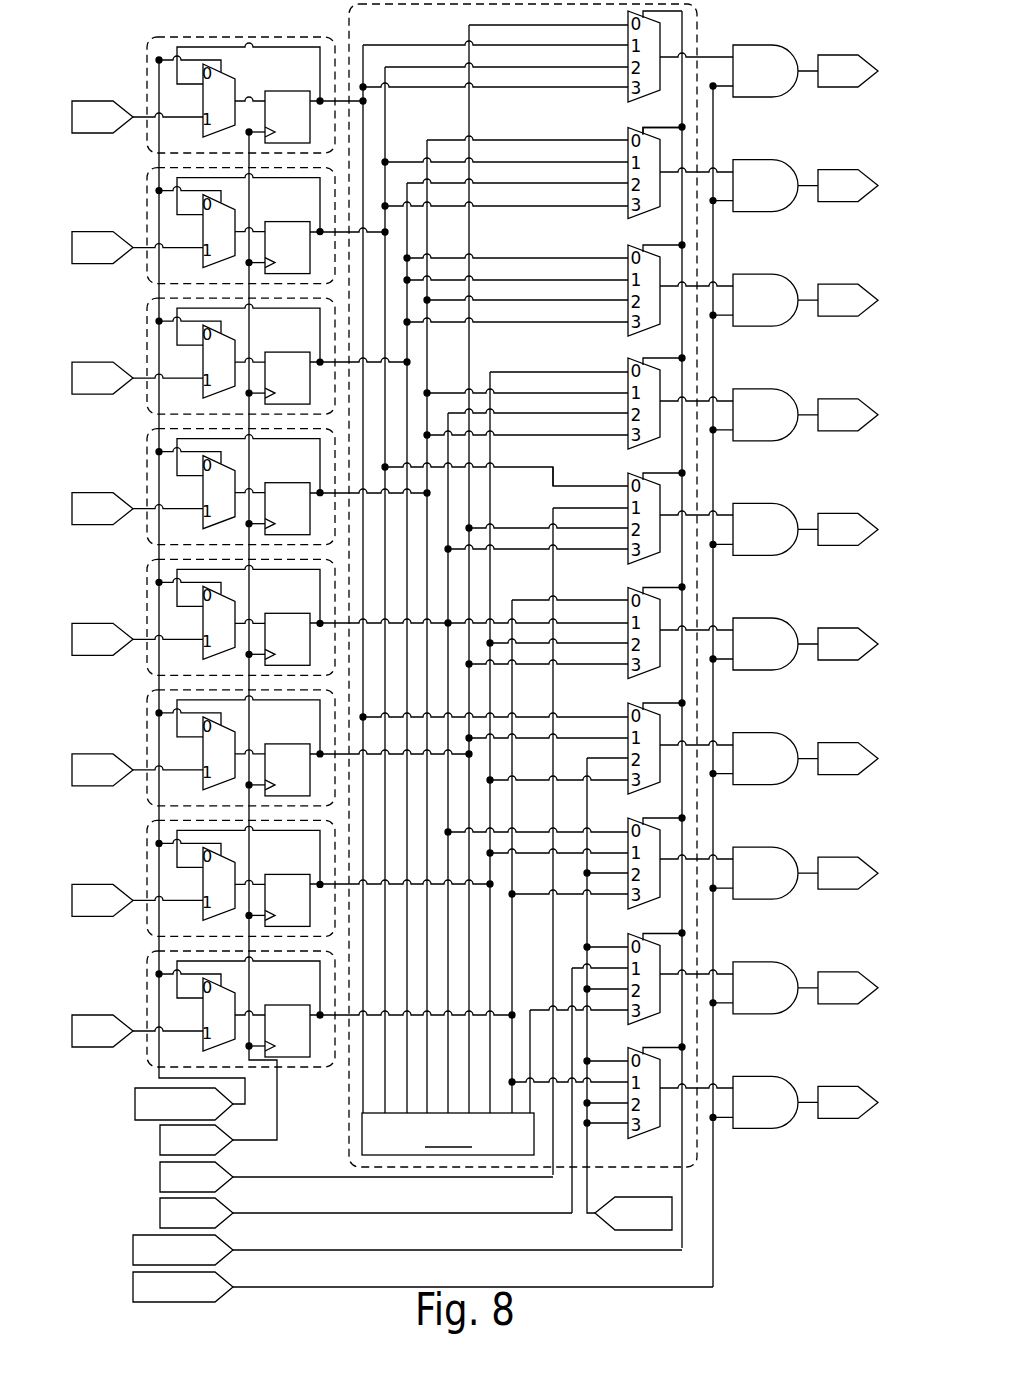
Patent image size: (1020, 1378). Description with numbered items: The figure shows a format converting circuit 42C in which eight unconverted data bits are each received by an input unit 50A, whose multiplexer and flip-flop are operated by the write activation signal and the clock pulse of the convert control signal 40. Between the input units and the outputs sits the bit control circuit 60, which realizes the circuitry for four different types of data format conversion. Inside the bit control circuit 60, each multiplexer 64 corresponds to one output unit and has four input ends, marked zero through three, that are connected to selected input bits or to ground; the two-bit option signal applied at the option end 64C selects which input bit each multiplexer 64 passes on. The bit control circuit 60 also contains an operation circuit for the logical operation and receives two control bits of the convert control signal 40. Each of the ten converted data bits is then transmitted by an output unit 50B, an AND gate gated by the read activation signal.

The input unit 50A is at (147, 70).
The bit control circuit 60 is at (695, 30).
The multiplexer 64 is at (627, 218).
The option end 64C is at (638, 125).
The output unit 50B is at (752, 97).
The convert control signal 40 is at (117, 1078).
The format converting circuit 42C is at (730, 1223).